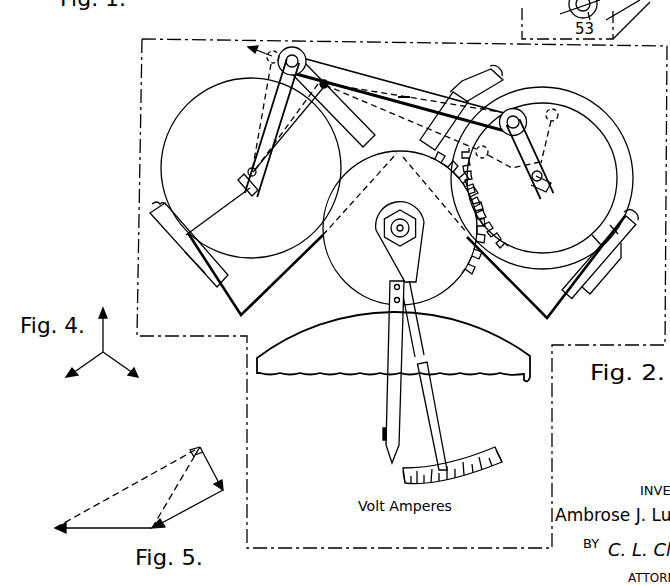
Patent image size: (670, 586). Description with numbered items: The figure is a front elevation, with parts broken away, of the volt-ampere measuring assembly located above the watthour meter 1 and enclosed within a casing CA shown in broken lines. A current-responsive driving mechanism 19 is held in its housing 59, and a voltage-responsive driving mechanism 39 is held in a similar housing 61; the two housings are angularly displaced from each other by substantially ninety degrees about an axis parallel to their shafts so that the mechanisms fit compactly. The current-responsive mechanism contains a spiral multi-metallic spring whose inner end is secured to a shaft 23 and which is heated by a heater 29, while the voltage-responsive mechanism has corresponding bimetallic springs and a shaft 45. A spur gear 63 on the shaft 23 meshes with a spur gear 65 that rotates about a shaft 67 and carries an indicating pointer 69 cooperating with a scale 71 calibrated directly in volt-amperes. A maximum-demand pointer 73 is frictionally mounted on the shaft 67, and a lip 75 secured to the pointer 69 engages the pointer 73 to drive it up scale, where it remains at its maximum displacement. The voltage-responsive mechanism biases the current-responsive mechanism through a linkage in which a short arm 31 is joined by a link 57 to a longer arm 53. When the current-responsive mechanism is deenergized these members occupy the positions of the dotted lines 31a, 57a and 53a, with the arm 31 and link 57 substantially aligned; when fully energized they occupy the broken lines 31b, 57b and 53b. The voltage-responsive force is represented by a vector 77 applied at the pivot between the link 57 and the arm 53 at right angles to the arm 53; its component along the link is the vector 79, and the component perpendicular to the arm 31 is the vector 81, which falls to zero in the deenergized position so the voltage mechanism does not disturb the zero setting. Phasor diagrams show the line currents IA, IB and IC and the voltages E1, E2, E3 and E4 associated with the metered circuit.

In FIG. 2, the watthour meter 1 is at (518, 368).
In FIG. 2, the current-responsive driving mechanism 19 is at (653, 175).
In FIG. 2, the shaft 23 is at (545, 175).
In FIG. 2, the heater 29 is at (612, 280).
In FIG. 2, the arm 31 is at (528, 147).
In FIG. 2, the dotted line showing deenergized position of arm 31a is at (512, 172).
In FIG. 2, the broken line showing fully energized position of arm 31b is at (549, 148).
In FIG. 2, the voltage-responsive driving mechanism 39 is at (163, 117).
In FIG. 2, the shaft 45 is at (262, 177).
In FIG. 2, the arm 53 is at (268, 133).
In FIG. 2, the dotted line showing deenergized position of arm 53a is at (268, 93).
In FIG. 2, the broken line showing fully energized position of arm 53b is at (290, 128).
In FIG. 2, the link 57 is at (352, 76).
In FIG. 2, the dotted line showing deenergized position of link 57a is at (410, 123).
In FIG. 2, the broken line showing fully energized position of link 57b is at (376, 86).
In FIG. 2, the housing 59 is at (619, 242).
In FIG. 2, the housing 61 is at (195, 252).
In FIG. 2, the spur gear 63 is at (537, 248).
In FIG. 2, the spur gear 65 is at (452, 282).
In FIG. 2, the shaft 67 is at (393, 229).
In FIG. 2, the indicating pointer 69 is at (392, 390).
In FIG. 2, the scale 71 is at (480, 452).
In FIG. 2, the maximum-demand pointer 73 is at (433, 400).
In FIG. 2, the lip 75 is at (385, 432).
In FIG. 2, the vector 77 is at (260, 52).
In FIG. 2, the vector 79 is at (405, 97).
In FIG. 2, the vector 81 is at (532, 108).
In FIG. 2, the casing CA is at (455, 42).
In FIG. 4, the phase A current IA is at (102, 322).
In FIG. 4, the phase B current IB is at (130, 368).
In FIG. 4, the phase C current IC is at (74, 368).
In FIG. 5, the voltage vector E1 is at (187, 509).
In FIG. 5, the voltage vector E2 is at (218, 468).
In FIG. 5, the voltage vector E3 is at (103, 536).
In FIG. 5, the voltage vector E4 is at (129, 487).